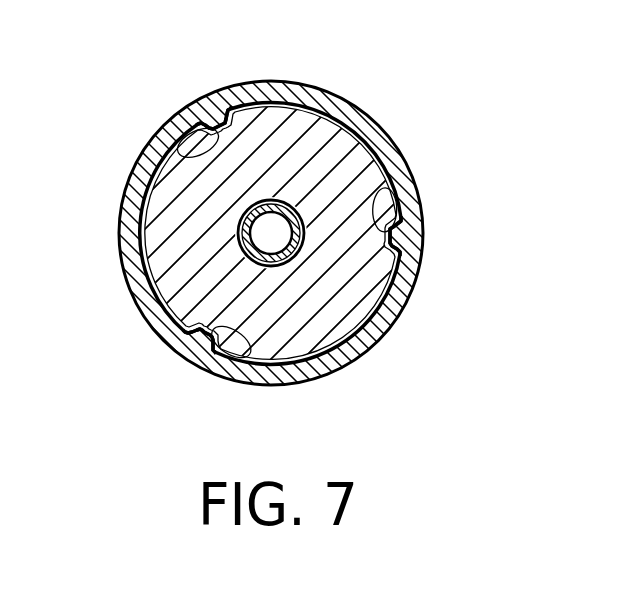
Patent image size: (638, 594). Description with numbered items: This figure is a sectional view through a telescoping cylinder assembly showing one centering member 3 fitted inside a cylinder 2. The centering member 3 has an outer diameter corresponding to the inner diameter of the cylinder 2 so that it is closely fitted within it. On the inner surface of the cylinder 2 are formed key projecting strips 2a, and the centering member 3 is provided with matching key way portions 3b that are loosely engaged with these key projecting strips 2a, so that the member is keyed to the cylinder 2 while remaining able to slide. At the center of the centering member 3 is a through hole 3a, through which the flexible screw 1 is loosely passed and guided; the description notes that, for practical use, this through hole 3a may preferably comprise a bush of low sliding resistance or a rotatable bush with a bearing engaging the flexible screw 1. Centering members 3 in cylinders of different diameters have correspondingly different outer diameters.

The flexible screw 1 is at (300, 243).
The cylinder 2 is at (121, 223).
The key projecting strips 2a is at (219, 110).
The centering member 3 is at (298, 127).
The through hole 3a is at (355, 144).
The key way portions 3b is at (188, 143).